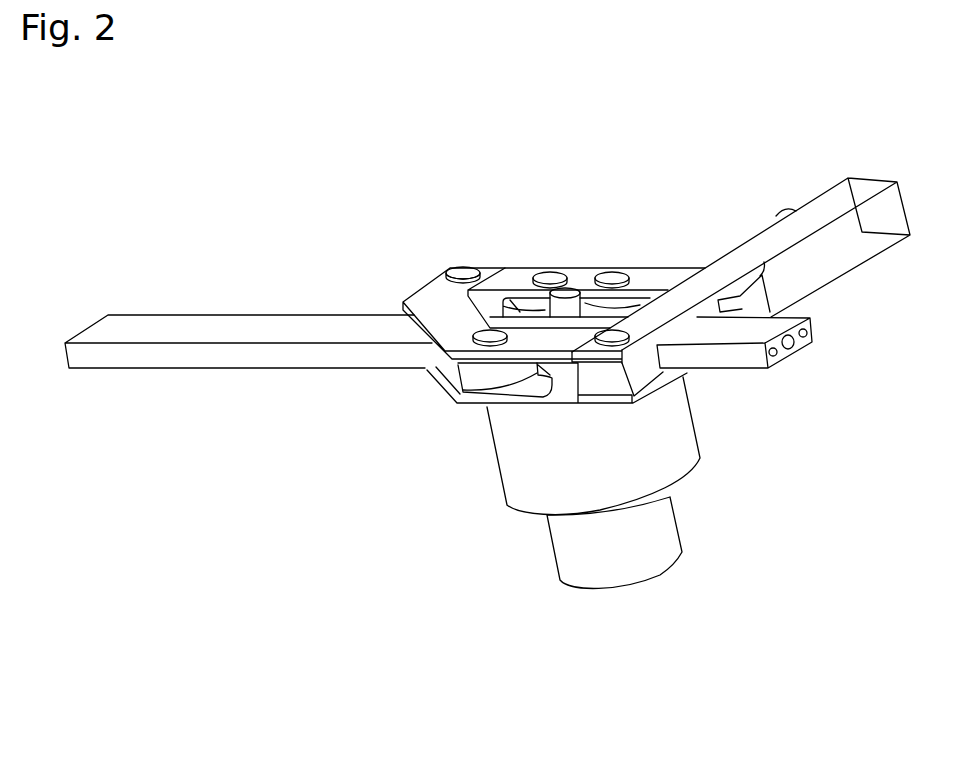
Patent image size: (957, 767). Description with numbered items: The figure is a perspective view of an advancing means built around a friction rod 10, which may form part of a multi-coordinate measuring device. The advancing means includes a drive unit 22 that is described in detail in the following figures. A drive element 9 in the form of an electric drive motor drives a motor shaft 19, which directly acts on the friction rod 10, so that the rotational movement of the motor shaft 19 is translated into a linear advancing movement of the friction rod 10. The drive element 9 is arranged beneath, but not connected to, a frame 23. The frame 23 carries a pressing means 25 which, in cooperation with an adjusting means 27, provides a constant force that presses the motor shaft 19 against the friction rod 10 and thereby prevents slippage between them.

The drive element 9 is at (627, 475).
The friction rod 10 is at (152, 328).
The motor shaft 19 is at (563, 302).
The drive unit 22 is at (477, 232).
The frame 23 is at (473, 402).
The pressing means 25 is at (600, 237).
The adjusting means 27 is at (765, 205).